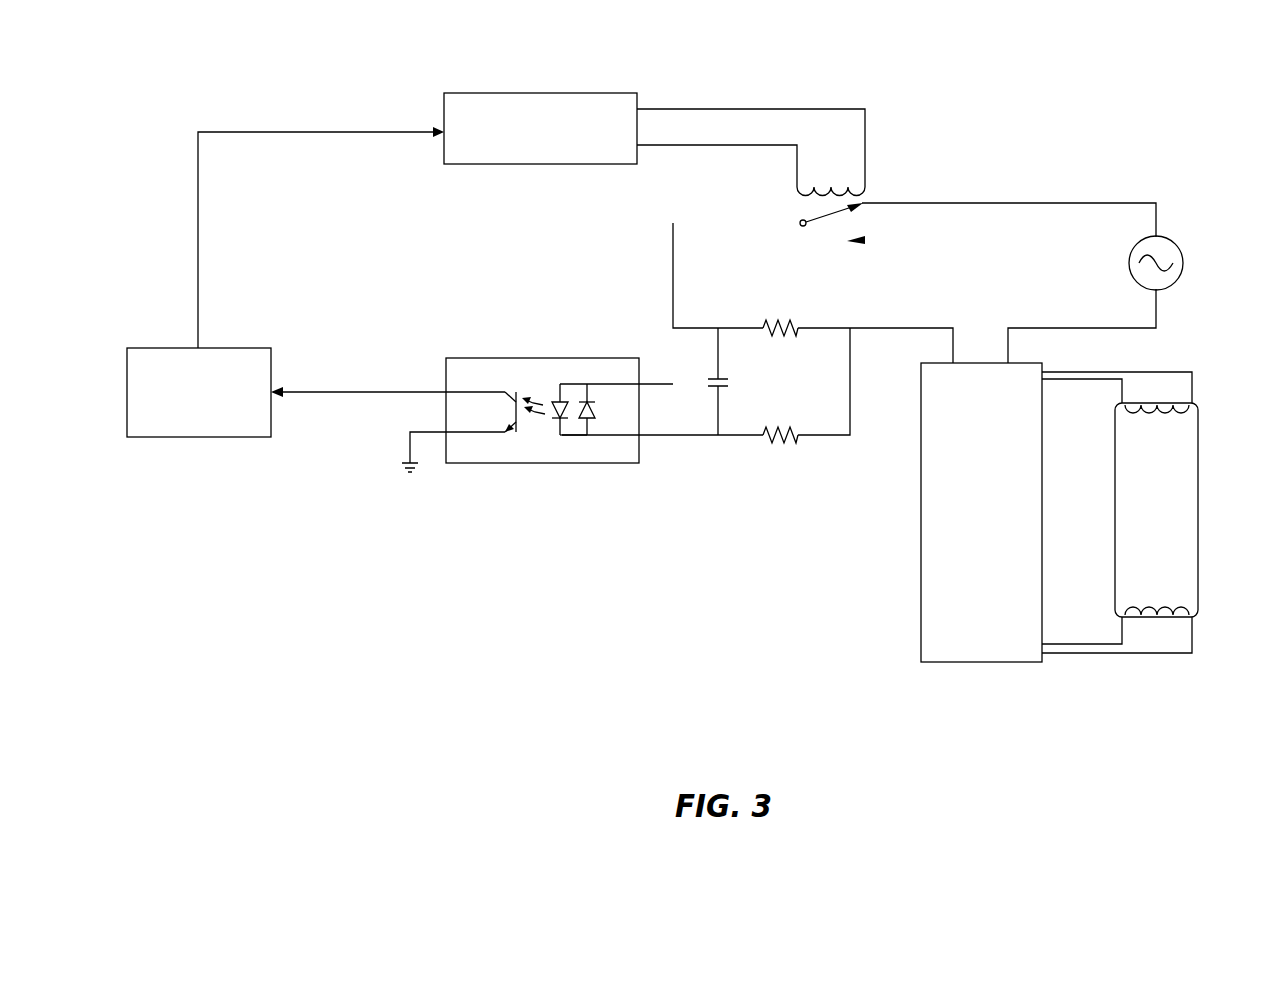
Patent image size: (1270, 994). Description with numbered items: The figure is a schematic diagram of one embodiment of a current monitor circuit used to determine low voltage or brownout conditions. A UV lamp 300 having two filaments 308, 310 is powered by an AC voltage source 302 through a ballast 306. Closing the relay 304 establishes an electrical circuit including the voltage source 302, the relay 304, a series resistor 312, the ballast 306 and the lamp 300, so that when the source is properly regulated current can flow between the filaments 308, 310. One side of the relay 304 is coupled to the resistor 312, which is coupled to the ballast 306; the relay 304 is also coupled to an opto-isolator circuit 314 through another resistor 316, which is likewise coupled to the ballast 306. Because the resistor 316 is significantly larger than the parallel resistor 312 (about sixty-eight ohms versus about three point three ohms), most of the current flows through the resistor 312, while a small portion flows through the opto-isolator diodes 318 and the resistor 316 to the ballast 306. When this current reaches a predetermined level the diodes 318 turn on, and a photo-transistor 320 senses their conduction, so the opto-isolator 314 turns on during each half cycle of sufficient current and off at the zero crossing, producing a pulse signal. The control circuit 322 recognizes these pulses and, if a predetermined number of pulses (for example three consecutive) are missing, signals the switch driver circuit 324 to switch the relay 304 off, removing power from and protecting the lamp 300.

The UV lamp 300 is at (1183, 503).
The AC voltage source 302 is at (1175, 246).
The relay 304 is at (840, 228).
The ballast 306 is at (965, 662).
The filament 308 is at (1150, 420).
The filament 310 is at (1150, 600).
The resistor 312 is at (787, 310).
The opto-isolator circuit 314 is at (542, 410).
The resistor 316 is at (787, 417).
The opto-isolator diodes 318 is at (545, 433).
The photo-transistor 320 is at (543, 382).
The control circuit 322 is at (235, 348).
The switch driver circuit 324 is at (597, 93).